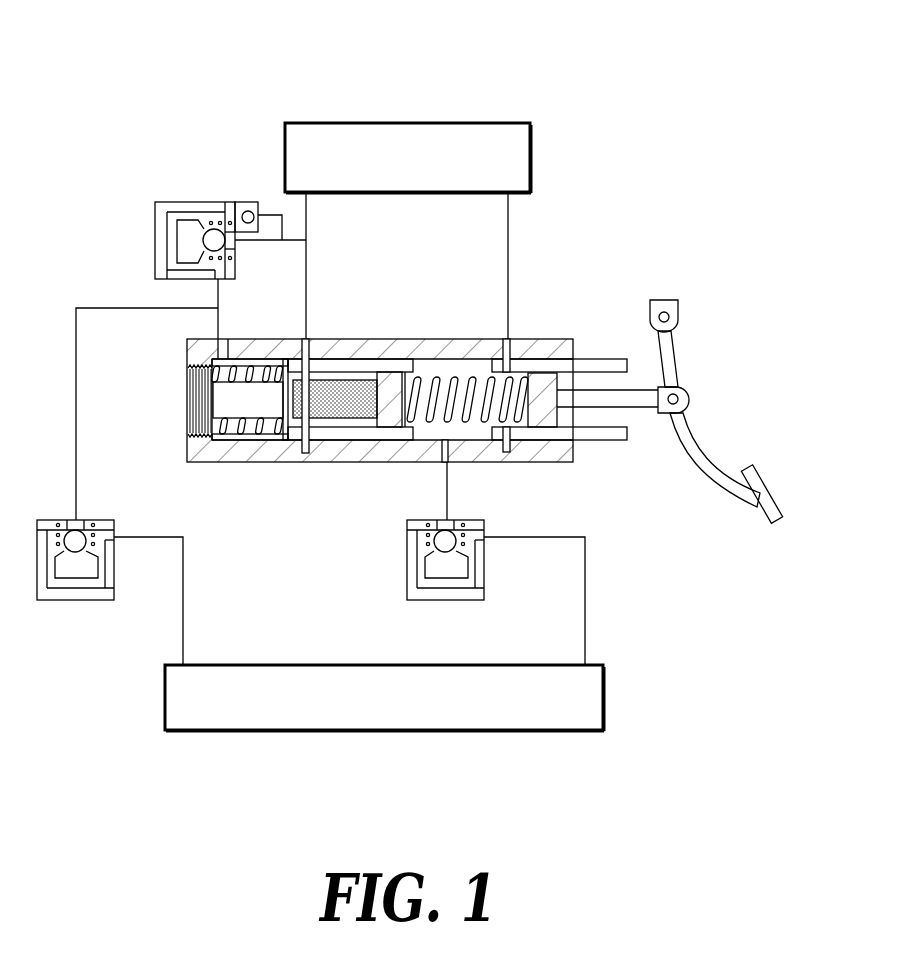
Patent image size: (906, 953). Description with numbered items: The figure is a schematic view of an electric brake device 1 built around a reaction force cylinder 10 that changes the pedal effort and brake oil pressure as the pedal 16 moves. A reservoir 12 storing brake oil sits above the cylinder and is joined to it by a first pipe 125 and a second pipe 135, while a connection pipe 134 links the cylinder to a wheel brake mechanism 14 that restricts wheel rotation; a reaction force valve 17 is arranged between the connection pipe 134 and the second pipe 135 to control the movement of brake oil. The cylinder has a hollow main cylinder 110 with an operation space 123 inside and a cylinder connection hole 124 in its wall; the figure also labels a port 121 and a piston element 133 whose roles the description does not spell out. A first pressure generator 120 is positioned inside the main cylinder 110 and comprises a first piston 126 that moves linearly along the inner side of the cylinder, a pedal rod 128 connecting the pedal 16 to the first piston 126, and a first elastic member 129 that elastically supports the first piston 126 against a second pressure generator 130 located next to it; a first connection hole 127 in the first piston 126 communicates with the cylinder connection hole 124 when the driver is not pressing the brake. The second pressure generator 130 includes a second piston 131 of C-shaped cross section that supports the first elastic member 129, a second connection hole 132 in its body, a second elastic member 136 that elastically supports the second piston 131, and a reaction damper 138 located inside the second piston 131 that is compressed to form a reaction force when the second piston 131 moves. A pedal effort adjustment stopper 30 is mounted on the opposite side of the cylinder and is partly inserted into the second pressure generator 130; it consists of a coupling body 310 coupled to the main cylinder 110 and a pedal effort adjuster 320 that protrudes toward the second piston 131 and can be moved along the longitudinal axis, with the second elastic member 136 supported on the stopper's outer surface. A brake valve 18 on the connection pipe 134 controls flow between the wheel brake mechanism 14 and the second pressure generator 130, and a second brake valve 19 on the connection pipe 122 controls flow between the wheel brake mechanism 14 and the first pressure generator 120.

The electric brake device 1 is at (137, 37).
The reaction force cylinder 10 is at (395, 369).
The reservoir 12 is at (488, 122).
The wheel brake mechanism 14 is at (500, 665).
The pedal 16 is at (730, 405).
The reaction force valve 17 is at (132, 222).
The brake valve 18 is at (42, 498).
The second brake valve 19 is at (388, 568).
The pedal effort adjustment stopper 30 is at (157, 409).
The coupling body 310 is at (186, 421).
The pedal effort adjuster 320 is at (243, 362).
The main cylinder 110 is at (571, 458).
The first pressure generator 120 is at (606, 332).
The first port 121 is at (445, 443).
The connection pipe 122 is at (447, 483).
The operation space 123 is at (430, 432).
The cylinder connection hole 124 is at (510, 338).
The first pipe 125 is at (508, 270).
The first piston 126 is at (501, 472).
The first connection hole 127 is at (500, 360).
The pedal rod 128 is at (648, 406).
The first elastic member 129 is at (415, 373).
The second pressure generator 130 is at (239, 429).
The second piston 131 is at (348, 360).
The second connection hole 132 is at (301, 340).
The second piston 133 is at (337, 400).
The connection pipe 134 is at (218, 298).
The second pipe 135 is at (306, 262).
The second elastic member 136 is at (214, 445).
The reaction damper 138 is at (327, 420).